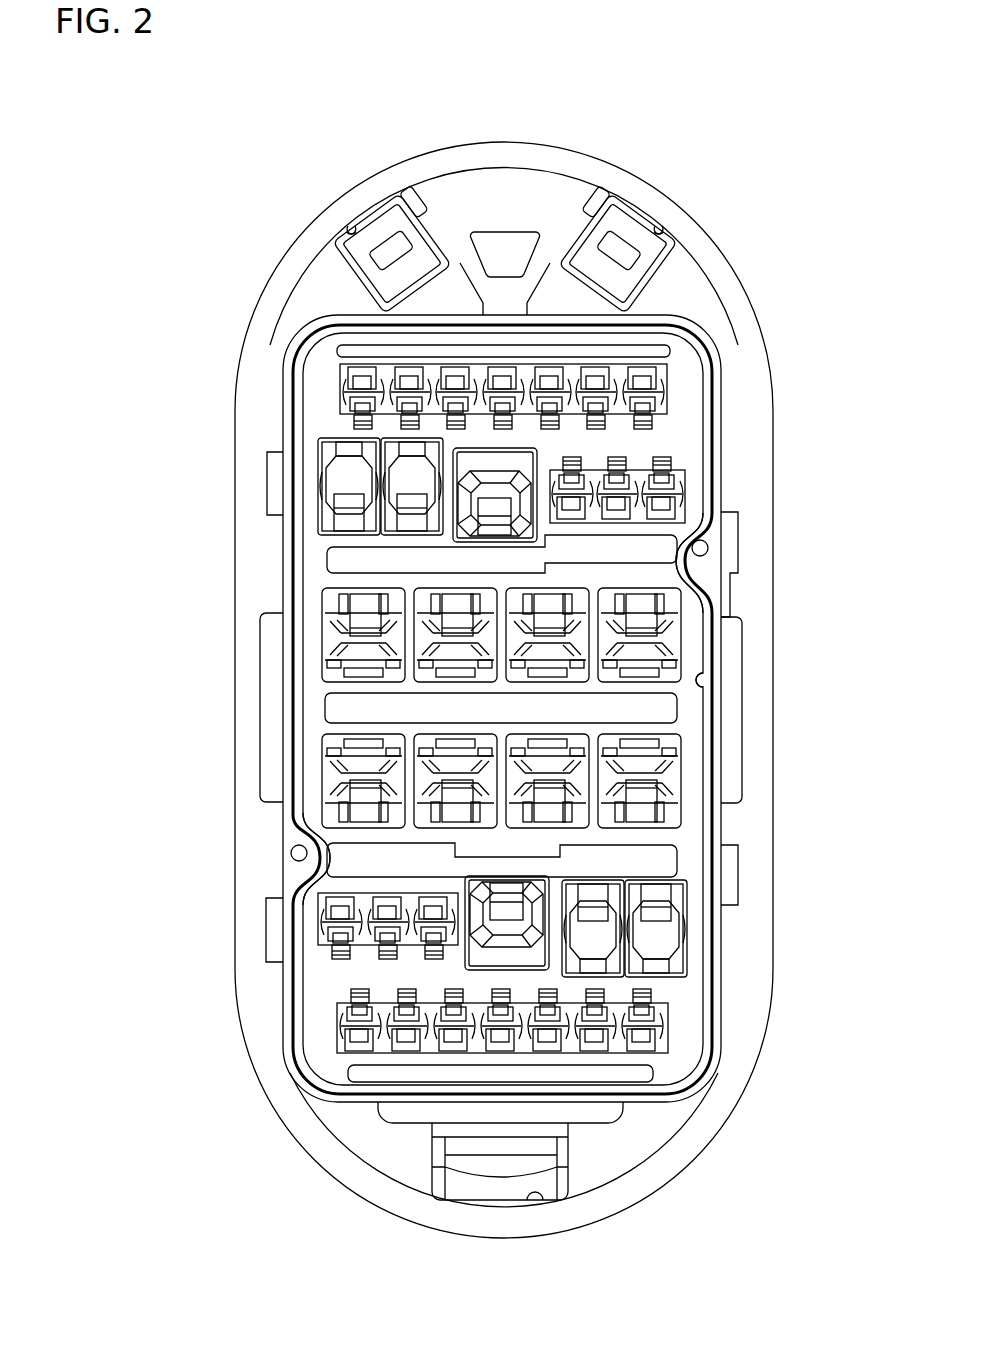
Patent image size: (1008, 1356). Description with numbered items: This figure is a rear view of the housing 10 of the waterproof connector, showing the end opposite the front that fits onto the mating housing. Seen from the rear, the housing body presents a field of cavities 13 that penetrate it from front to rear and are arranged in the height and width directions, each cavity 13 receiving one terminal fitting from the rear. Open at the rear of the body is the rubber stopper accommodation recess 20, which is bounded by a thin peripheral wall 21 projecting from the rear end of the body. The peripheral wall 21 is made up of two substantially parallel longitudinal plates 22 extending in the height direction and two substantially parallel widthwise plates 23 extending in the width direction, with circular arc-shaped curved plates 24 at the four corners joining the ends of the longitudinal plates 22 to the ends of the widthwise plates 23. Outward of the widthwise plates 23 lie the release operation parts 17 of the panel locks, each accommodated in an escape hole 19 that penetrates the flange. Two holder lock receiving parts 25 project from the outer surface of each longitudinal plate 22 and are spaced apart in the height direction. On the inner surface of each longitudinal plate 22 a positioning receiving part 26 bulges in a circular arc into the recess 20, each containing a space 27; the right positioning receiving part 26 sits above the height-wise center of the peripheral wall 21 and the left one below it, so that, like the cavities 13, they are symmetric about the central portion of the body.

The housing 10 is at (567, 148).
The cavities 13 is at (672, 640).
The release operation part 17 is at (405, 248).
The escape hole 19 is at (348, 230).
The rubber stopper accommodation recess 20 is at (700, 685).
The peripheral wall 21 is at (712, 463).
The longitudinal plates 22 is at (296, 745).
The widthwise plates 23 is at (505, 330).
The curved plates 24 is at (318, 355).
The holder lock receiving parts 25 is at (270, 482).
The positioning receiving parts 26 is at (690, 585).
The space 27 is at (706, 546).